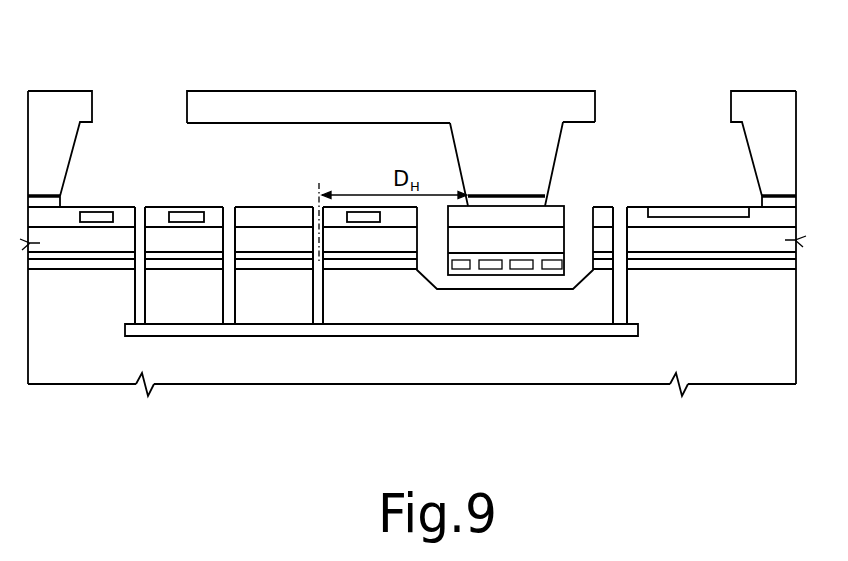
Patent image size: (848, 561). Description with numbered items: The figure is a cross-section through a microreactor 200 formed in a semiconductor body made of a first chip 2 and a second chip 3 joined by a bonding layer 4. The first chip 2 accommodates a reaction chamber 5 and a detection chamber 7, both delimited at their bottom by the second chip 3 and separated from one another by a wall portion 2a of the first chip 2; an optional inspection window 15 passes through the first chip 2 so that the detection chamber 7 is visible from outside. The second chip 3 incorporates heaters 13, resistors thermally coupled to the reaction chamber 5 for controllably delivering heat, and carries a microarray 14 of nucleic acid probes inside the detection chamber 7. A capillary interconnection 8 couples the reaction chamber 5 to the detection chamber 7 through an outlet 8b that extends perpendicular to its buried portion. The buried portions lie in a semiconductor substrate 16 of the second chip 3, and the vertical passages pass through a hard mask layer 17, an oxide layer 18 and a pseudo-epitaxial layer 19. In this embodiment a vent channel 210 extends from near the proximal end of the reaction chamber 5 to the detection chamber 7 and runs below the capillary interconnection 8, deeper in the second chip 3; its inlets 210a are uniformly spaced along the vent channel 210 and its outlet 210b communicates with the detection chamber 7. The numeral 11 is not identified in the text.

The first chip 2 is at (808, 152).
The wall portion 2a is at (508, 172).
The second chip 3 is at (99, 393).
The bonding layer 4 is at (62, 196).
The reaction chamber 5 is at (275, 139).
The detection chamber 7 is at (637, 135).
The capillary interconnection 8 is at (488, 294).
The outlet 8b is at (579, 209).
The cap left wall 11 is at (140, 98).
The heater 13 is at (102, 208).
The microarray 14 is at (686, 207).
The inspection window 15 is at (700, 97).
The semiconductor substrate 16 is at (67, 375).
The hard mask layer 17 is at (660, 264).
The oxide layer 18 is at (717, 256).
The pseudo-epitaxial layer 19 is at (730, 239).
The microreactor 200 is at (668, 63).
The vent channel 210 is at (411, 332).
The inlet 210a is at (142, 210).
The outlet 210b is at (620, 202).